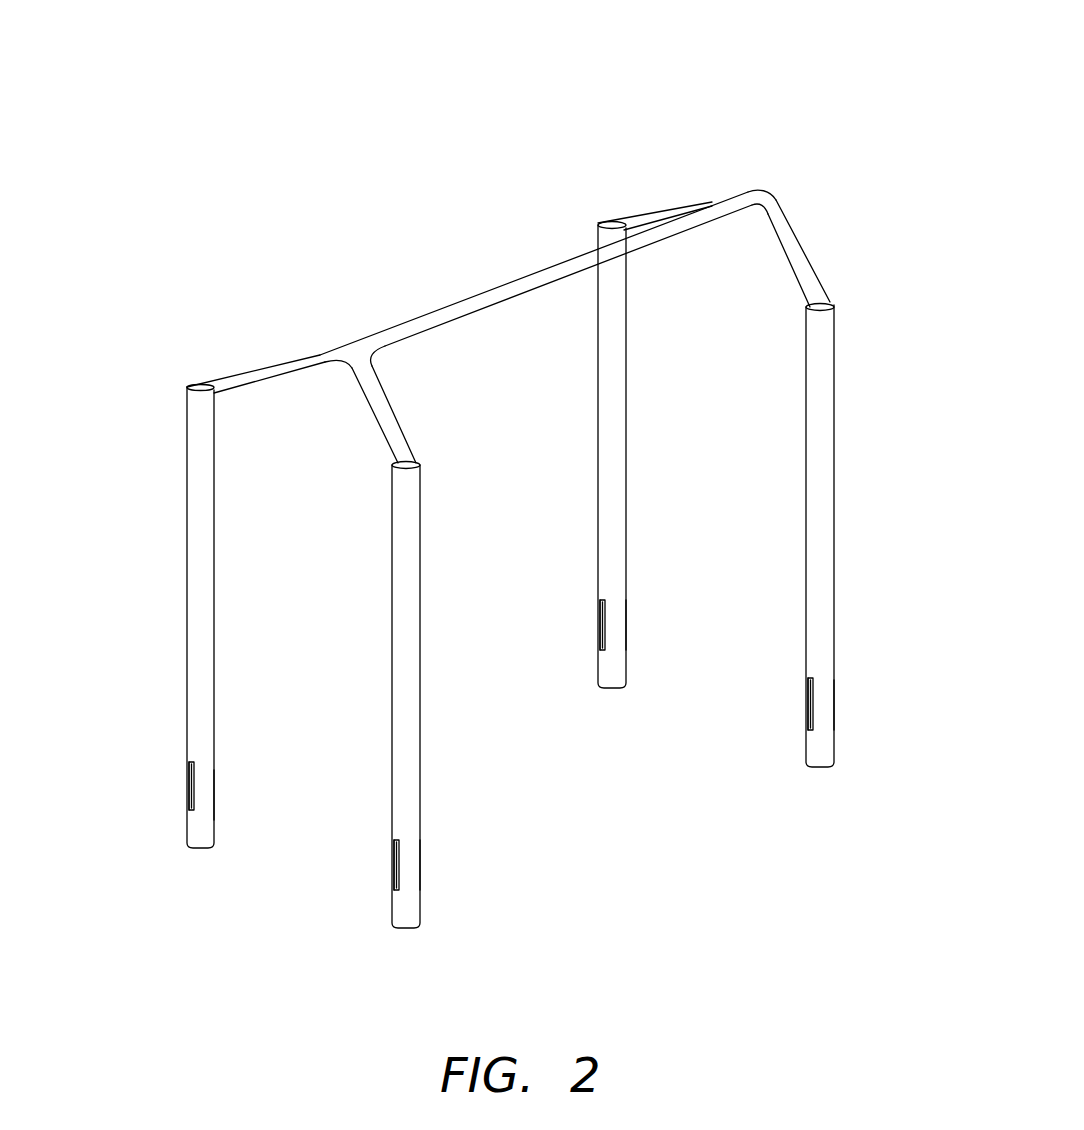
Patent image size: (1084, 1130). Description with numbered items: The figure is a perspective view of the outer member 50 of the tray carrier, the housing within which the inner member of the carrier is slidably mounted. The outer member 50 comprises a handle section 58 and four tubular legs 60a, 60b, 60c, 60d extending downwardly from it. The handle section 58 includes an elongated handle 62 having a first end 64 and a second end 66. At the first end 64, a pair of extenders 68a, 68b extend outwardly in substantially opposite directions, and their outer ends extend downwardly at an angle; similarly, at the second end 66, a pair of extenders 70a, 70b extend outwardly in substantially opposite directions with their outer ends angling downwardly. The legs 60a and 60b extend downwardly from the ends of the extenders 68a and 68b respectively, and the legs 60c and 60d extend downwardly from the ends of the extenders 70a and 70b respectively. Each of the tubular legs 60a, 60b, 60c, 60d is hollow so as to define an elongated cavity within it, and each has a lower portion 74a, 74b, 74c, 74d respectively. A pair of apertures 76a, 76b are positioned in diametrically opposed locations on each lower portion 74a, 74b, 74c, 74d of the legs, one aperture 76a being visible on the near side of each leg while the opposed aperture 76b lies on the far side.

The outer member 50 is at (684, 75).
The handle section 58 is at (238, 293).
The tubular leg 60a is at (195, 565).
The tubular leg 60b is at (403, 620).
The tubular leg 60c is at (615, 420).
The tubular leg 60d is at (822, 478).
The elongated handle 62 is at (528, 278).
The first end 64 is at (365, 345).
The second end 66 is at (731, 205).
The extender 68a is at (285, 365).
The extender 68b is at (382, 415).
The extender 70a is at (675, 200).
The extender 70b is at (788, 237).
The lower portion 74a is at (203, 743).
The lower portion 74b is at (407, 820).
The lower portion 74c is at (608, 587).
The lower portion 74d is at (820, 670).
The aperture 76a is at (190, 785).
The aperture 76b is at (215, 793).